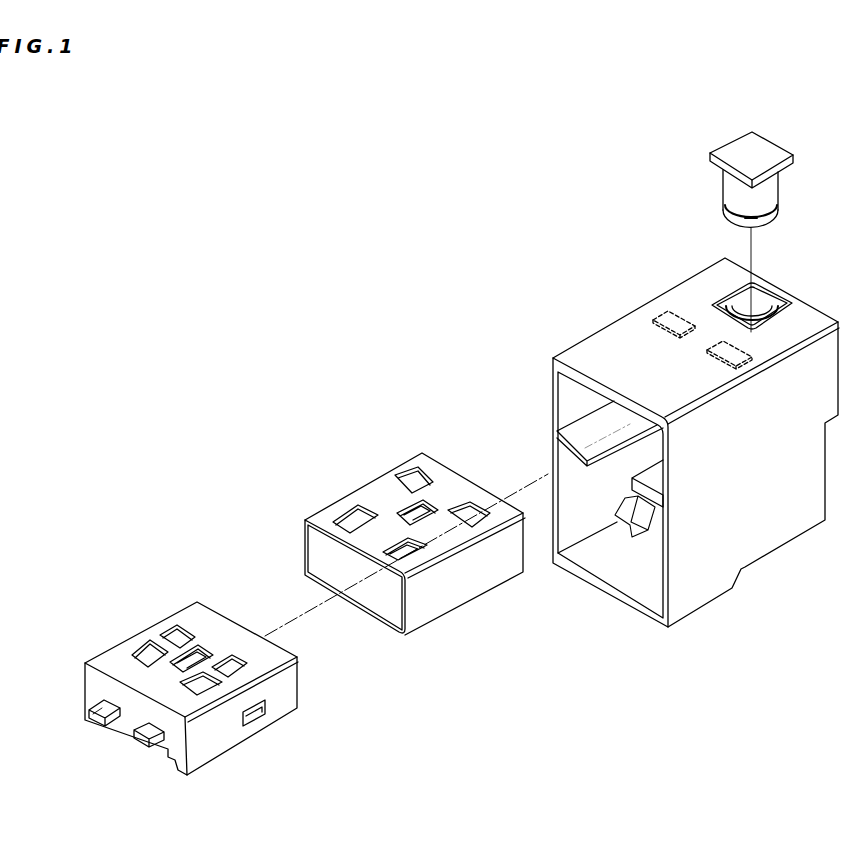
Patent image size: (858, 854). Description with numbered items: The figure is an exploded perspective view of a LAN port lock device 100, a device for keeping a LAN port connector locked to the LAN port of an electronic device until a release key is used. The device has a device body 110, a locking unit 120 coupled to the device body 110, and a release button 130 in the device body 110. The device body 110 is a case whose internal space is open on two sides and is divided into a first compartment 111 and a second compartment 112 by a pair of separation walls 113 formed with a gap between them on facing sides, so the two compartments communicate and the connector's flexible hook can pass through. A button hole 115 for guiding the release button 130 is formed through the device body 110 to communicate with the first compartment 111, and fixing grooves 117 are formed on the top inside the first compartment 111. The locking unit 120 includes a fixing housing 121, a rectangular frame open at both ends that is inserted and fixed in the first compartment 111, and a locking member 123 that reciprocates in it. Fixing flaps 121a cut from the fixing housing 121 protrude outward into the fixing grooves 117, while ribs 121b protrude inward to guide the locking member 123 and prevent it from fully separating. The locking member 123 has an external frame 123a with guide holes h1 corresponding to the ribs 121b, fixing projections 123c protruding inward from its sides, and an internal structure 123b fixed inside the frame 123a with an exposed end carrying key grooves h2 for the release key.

The LAN port lock device 100 is at (409, 283).
The device body 110 is at (659, 434).
The first compartment 111 is at (565, 395).
The second compartment 112 is at (616, 577).
The separation walls 113 is at (559, 431).
The button hole 115 is at (768, 304).
The fixing grooves 117 is at (681, 309).
The locking unit 120 is at (213, 441).
The fixing housing 121 is at (412, 543).
The fixing flaps 121a is at (408, 474).
The ribs 121b is at (412, 516).
The locking member 123 is at (165, 628).
The external frame 123a is at (214, 747).
The internal structure 123b is at (97, 738).
The fixing projections 123c is at (258, 718).
The release button 130 is at (790, 143).
The guide holes h1 is at (142, 650).
The key grooves h2 is at (100, 714).